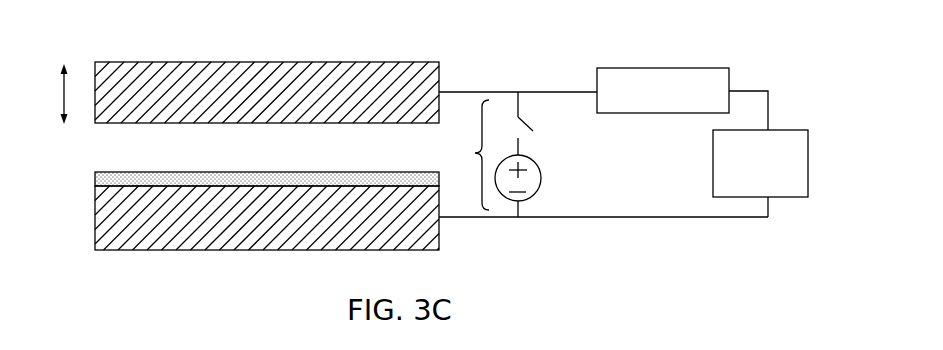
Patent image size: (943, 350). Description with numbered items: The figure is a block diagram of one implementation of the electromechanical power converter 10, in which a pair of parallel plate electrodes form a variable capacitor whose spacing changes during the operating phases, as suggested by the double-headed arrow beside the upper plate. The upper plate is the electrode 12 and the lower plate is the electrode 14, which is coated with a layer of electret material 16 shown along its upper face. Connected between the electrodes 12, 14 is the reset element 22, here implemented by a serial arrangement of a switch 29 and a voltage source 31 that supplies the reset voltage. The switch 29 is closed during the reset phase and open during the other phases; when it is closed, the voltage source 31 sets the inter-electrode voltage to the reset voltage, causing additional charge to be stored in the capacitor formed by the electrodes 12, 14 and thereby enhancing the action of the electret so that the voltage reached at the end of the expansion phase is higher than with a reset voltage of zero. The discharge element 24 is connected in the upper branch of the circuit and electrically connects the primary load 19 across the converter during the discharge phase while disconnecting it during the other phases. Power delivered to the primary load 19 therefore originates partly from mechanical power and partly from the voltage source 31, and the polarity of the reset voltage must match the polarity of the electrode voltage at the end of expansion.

The electromechanical power converter 10 is at (76, 37).
The electrode 12 is at (440, 67).
The electrode 14 is at (440, 242).
The layer of electret material 16 is at (95, 183).
The primary load 19 is at (713, 163).
The reset element 22 is at (489, 171).
The discharge element 24 is at (628, 114).
The switch 29 is at (525, 122).
The voltage source 31 is at (526, 205).